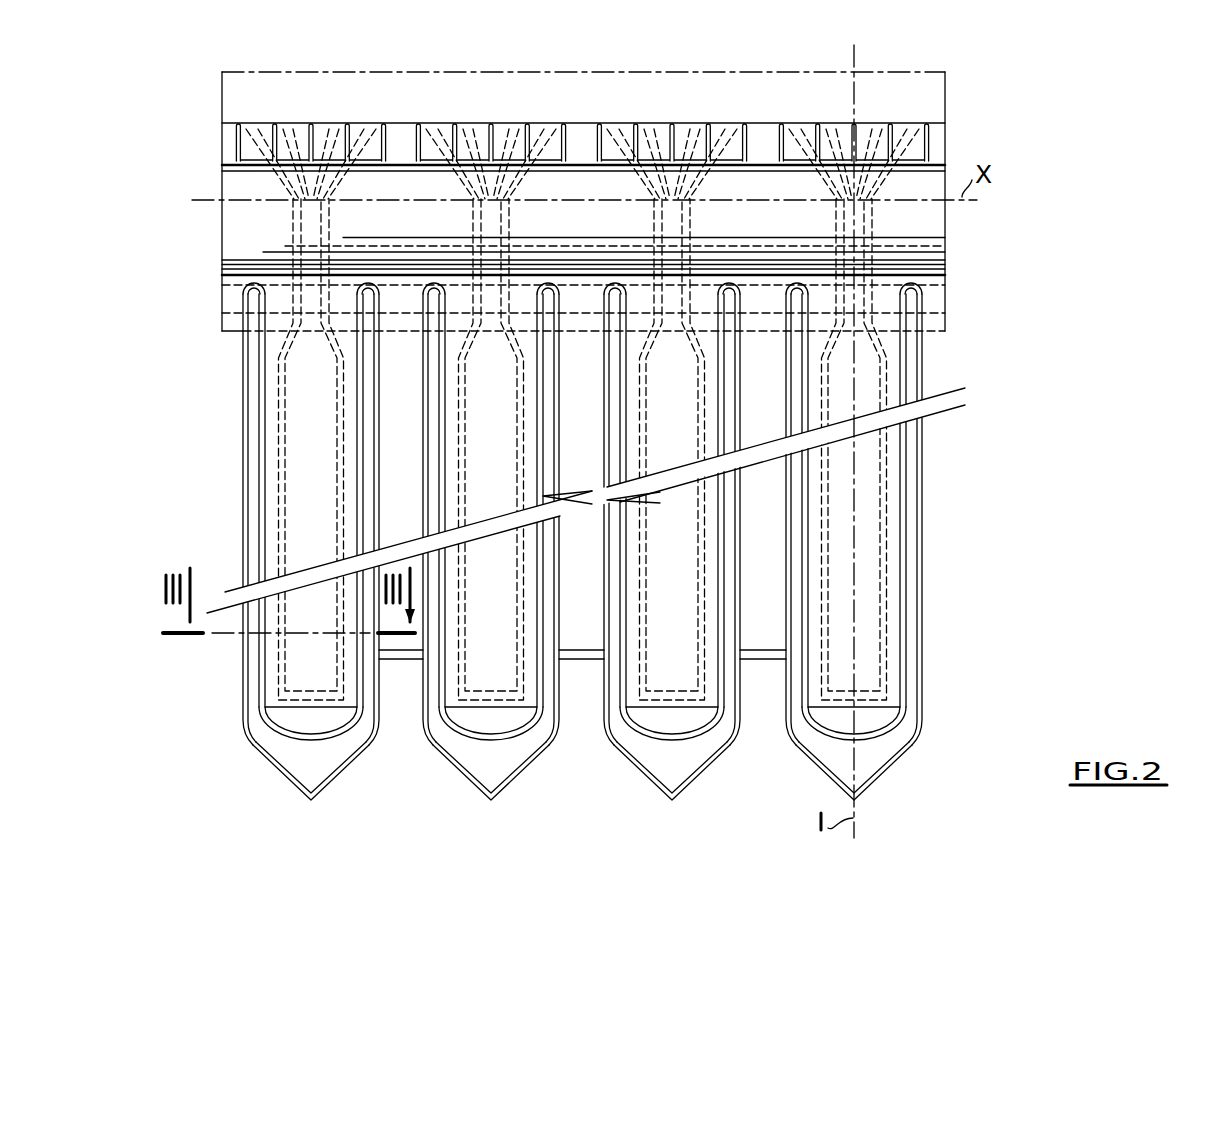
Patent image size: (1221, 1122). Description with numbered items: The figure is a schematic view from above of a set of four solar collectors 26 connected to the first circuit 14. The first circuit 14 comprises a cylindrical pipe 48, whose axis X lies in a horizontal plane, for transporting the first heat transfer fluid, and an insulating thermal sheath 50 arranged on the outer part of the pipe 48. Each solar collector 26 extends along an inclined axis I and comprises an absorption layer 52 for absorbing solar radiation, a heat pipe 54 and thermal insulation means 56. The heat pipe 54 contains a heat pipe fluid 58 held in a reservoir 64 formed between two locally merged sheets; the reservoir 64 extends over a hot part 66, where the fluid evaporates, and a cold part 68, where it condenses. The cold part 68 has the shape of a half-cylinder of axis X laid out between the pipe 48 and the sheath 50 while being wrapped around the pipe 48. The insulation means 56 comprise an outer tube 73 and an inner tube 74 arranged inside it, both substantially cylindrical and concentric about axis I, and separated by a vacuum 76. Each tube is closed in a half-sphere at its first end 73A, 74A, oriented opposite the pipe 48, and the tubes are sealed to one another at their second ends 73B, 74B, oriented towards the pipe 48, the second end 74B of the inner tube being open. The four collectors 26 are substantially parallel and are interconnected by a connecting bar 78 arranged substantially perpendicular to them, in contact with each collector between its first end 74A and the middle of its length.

The first circuit 14 is at (1085, 100).
The solar collector 26 is at (935, 445).
The pipe 48 is at (920, 222).
The insulating thermal sheath 50 is at (921, 96).
The absorption layer 52 is at (367, 470).
The heat pipe 54 is at (350, 423).
The thermal insulation means 56 is at (384, 544).
The heat pipe fluid 58 is at (883, 655).
The reservoir 64 is at (340, 377).
The hot part 66 is at (675, 440).
The cold part 68 is at (335, 133).
The outer tube 73 is at (270, 766).
The first end of the outer tube 73A is at (311, 803).
The second end of the outer tube 73B is at (371, 316).
The inner tube 74 is at (723, 642).
The first end of the inner tube 74A is at (297, 741).
The second end of the inner tube 74B is at (364, 297).
The vacuum 76 is at (287, 759).
The connecting bar 78 is at (581, 650).